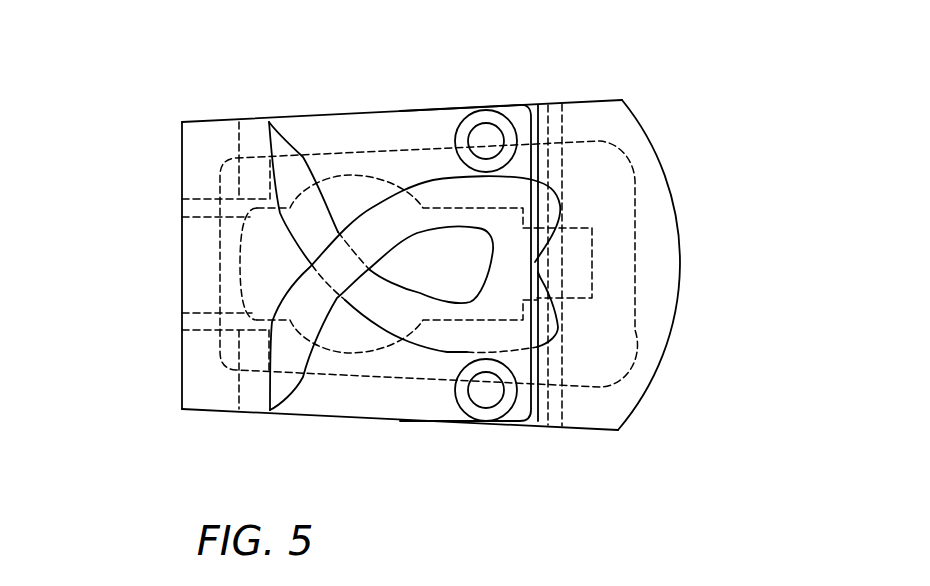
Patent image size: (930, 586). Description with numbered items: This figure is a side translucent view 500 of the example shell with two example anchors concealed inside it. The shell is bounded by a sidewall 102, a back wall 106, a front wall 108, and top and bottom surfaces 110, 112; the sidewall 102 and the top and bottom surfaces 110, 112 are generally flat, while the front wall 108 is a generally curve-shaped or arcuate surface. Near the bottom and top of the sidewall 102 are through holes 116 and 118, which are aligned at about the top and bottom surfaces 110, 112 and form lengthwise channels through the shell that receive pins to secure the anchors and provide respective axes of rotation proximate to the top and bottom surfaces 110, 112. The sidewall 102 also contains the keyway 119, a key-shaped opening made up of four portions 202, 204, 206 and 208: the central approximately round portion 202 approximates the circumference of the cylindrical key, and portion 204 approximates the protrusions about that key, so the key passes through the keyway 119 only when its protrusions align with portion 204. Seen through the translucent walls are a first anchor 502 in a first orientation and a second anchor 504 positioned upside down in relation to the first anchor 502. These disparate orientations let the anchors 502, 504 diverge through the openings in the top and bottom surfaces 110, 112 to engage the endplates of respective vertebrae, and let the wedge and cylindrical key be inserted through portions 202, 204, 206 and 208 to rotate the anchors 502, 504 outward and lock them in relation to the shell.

The side translucent view 500 is at (193, 82).
The sidewall 102 is at (582, 408).
The back wall 106 is at (182, 162).
The front wall 108 is at (667, 187).
The top surface 110 is at (326, 114).
The bottom surface 112 is at (430, 422).
The through hole 116 is at (492, 409).
The through hole 118 is at (490, 111).
The keyway opening 119 is at (247, 322).
The central round portion 202 is at (341, 328).
The protrusion portion 204 is at (258, 258).
The keyway portion 206 is at (452, 255).
The keyway portion 208 is at (557, 260).
The first anchor 502 is at (395, 212).
The second anchor 504 is at (392, 308).